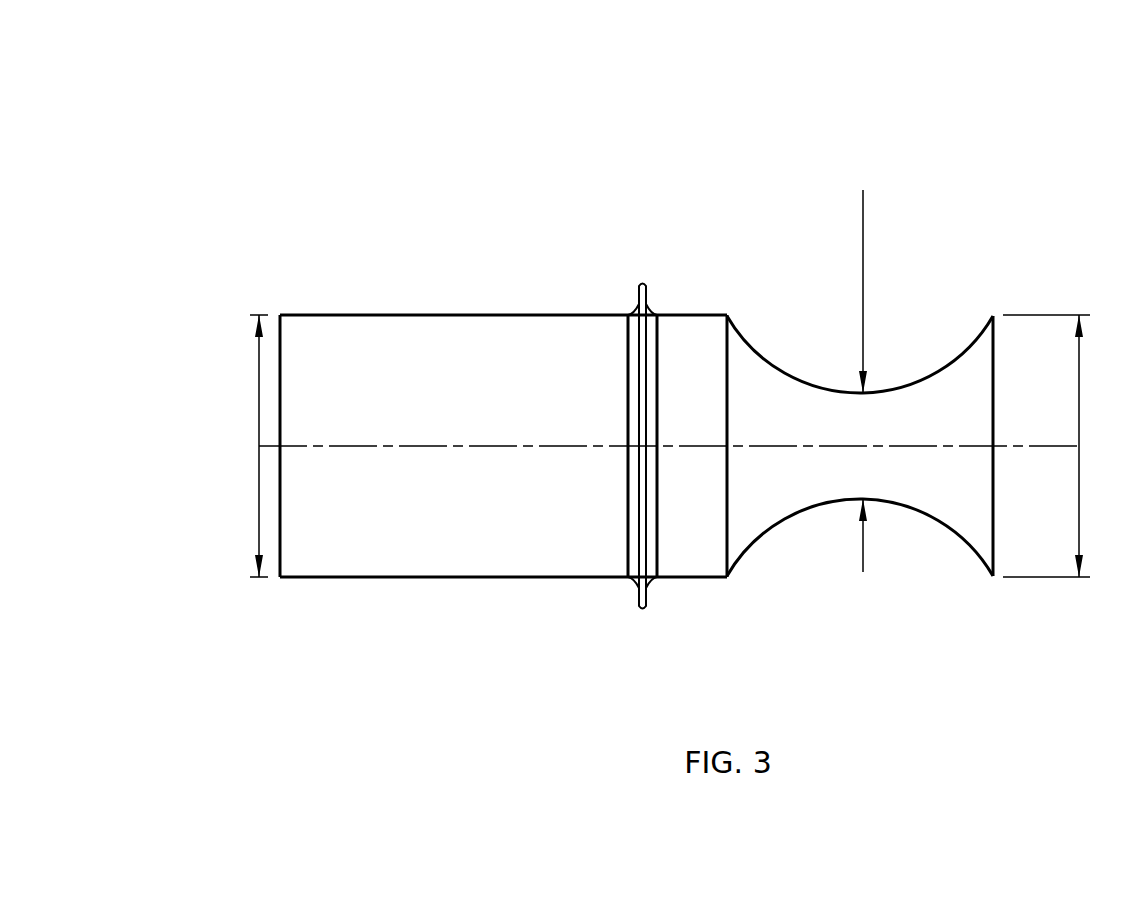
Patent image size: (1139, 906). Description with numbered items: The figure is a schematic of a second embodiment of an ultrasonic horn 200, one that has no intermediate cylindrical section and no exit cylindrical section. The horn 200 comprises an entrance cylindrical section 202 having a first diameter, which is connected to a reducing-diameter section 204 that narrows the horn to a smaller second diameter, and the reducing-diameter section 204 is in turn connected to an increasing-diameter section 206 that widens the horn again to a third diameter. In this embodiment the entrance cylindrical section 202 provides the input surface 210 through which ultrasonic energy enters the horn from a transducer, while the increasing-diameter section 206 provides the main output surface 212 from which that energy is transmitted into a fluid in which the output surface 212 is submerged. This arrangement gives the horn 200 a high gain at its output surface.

The ultrasonic horn 200 is at (708, 157).
The entrance cylindrical section 202 is at (280, 258).
The reducing-diameter section 204 is at (863, 202).
The increasing-diameter section 206 is at (863, 202).
The input surface 210 is at (278, 525).
The main output surface 212 is at (995, 540).